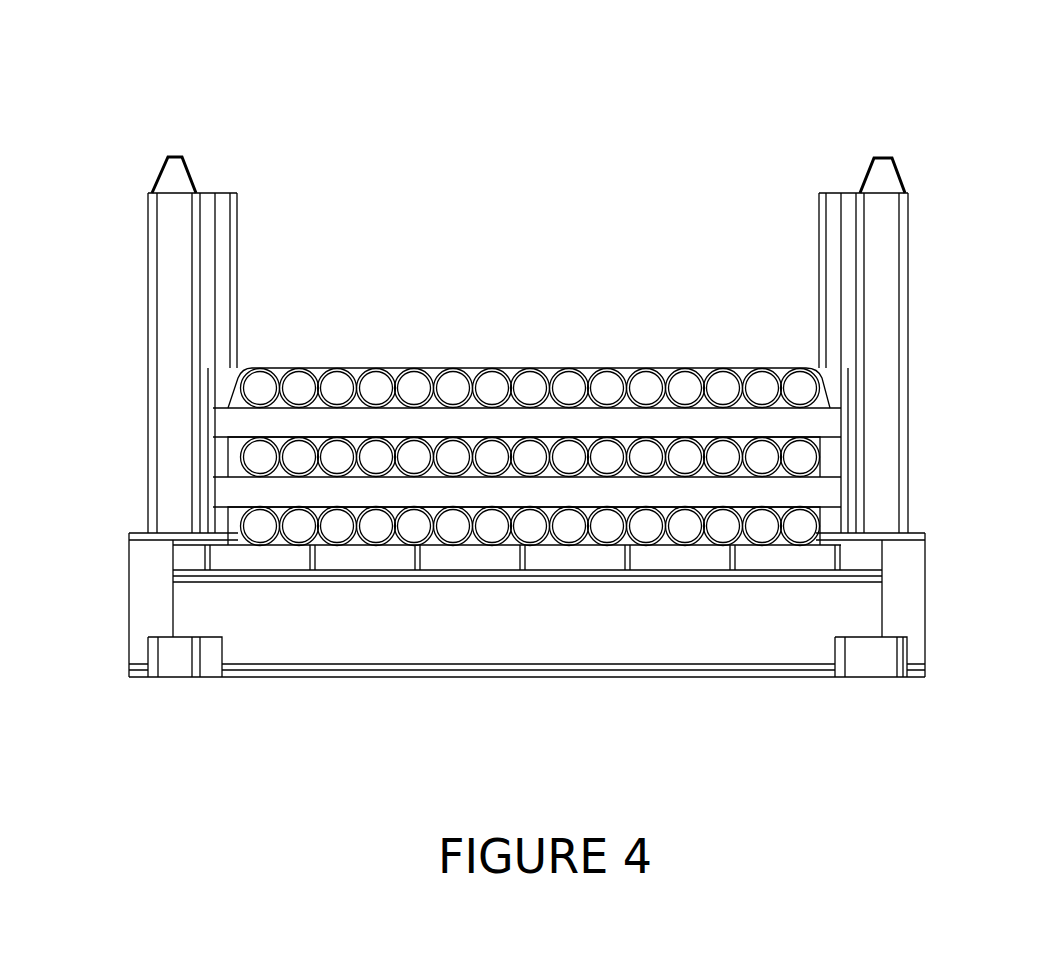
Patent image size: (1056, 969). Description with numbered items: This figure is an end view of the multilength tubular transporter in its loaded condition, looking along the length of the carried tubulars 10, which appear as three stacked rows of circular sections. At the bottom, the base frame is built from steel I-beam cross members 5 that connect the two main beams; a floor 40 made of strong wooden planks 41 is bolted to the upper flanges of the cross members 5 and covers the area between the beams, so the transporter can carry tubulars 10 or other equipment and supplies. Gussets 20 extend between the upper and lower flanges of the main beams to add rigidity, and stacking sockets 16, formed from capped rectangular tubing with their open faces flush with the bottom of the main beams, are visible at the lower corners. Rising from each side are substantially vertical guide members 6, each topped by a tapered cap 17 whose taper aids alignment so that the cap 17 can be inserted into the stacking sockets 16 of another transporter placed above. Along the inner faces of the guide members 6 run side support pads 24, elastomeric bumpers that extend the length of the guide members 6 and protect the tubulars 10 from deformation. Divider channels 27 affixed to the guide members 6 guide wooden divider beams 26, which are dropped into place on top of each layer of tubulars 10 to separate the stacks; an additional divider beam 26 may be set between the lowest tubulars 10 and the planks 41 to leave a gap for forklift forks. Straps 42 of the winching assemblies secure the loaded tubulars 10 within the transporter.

The cross member 5 is at (348, 638).
The guide member 6 is at (175, 305).
The tubulars 10 is at (440, 367).
The stacking socket 16 is at (878, 660).
The tapered cap 17 is at (883, 180).
The gusset 20 is at (903, 595).
The side support pad 24 is at (237, 277).
The divider beam 26 is at (327, 425).
The divider channel 27 is at (217, 212).
The floor 40 is at (462, 585).
The plank 41 is at (543, 555).
The strap 42 is at (587, 365).